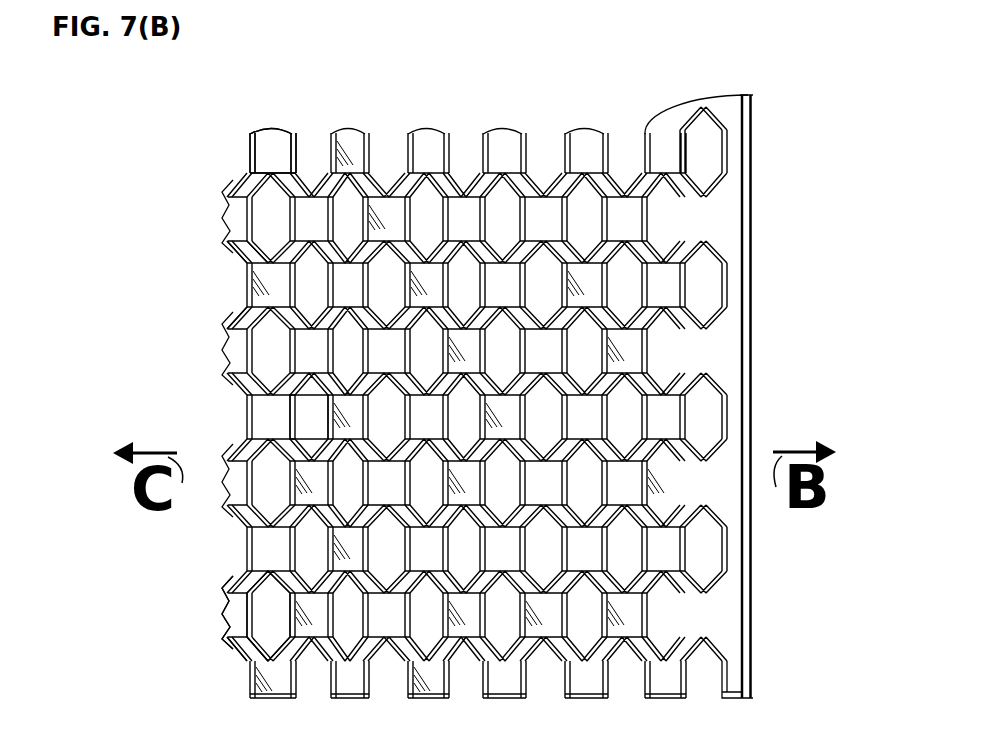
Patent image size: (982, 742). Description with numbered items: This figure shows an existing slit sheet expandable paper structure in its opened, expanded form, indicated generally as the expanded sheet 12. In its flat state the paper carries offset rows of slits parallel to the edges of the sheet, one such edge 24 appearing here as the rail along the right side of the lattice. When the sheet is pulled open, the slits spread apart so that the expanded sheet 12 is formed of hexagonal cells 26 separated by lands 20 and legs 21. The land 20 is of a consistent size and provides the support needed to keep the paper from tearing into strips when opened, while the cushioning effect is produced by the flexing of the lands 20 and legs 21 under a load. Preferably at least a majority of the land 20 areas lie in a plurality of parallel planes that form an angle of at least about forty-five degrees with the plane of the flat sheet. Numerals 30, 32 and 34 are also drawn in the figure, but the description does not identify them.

The expanded sheet 12 is at (158, 345).
The land 20 is at (265, 150).
The leg 21 is at (250, 259).
The edge 24 is at (748, 585).
The hexagonal cell 26 is at (303, 423).
The hexagonal cell 30 is at (253, 585).
The break line / edge 32 is at (238, 617).
The bottom strut 34 is at (255, 653).